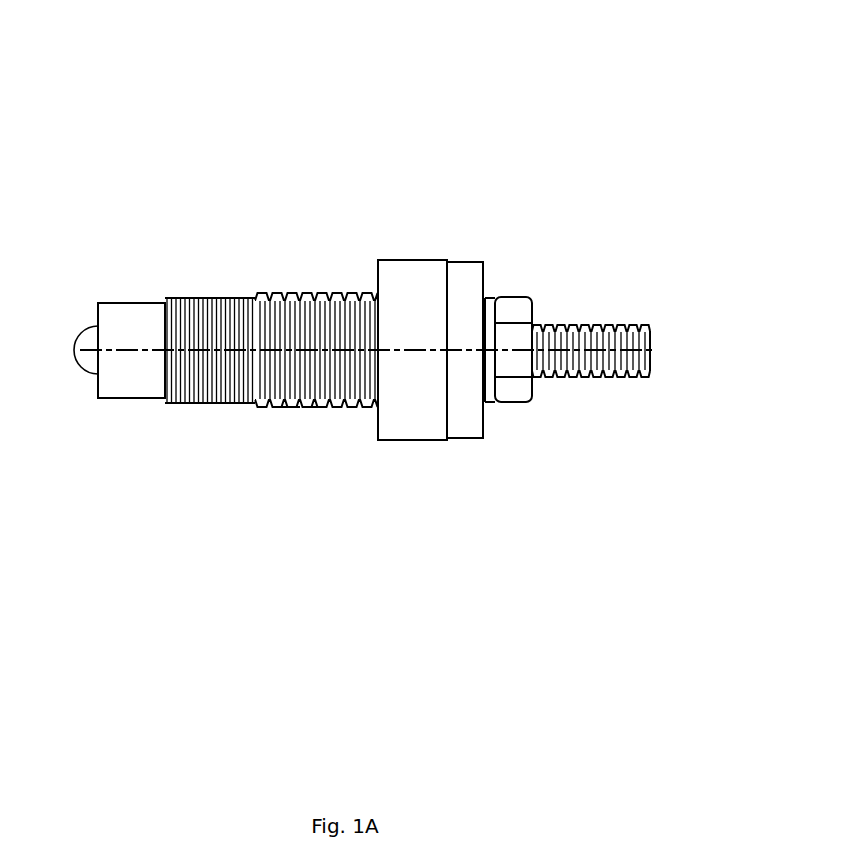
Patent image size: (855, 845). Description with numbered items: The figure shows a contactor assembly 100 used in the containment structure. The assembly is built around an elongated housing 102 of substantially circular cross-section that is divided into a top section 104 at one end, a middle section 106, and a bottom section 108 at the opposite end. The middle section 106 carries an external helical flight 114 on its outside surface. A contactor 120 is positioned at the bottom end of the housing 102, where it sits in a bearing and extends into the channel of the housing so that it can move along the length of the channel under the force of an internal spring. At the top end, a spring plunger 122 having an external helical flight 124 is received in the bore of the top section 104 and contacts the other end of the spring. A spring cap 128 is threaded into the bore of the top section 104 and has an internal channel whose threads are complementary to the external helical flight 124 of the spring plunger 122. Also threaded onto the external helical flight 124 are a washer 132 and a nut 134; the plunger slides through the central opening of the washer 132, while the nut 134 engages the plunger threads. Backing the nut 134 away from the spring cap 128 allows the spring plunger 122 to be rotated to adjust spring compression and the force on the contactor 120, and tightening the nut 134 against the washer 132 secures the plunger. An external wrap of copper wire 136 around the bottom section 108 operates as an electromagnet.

The contactor assembly 100 is at (267, 141).
The housing 102 is at (313, 403).
The top section 104 is at (419, 242).
The middle section 106 is at (319, 274).
The bottom section 108 is at (188, 274).
The external helical flight 114 is at (294, 418).
The contactor 120 is at (80, 350).
The spring plunger 122 is at (648, 375).
The external helical flight 124 is at (608, 391).
The spring cap 128 is at (467, 402).
The washer 132 is at (488, 404).
The nut 134 is at (515, 393).
The external wrap of copper wire 136 is at (205, 403).